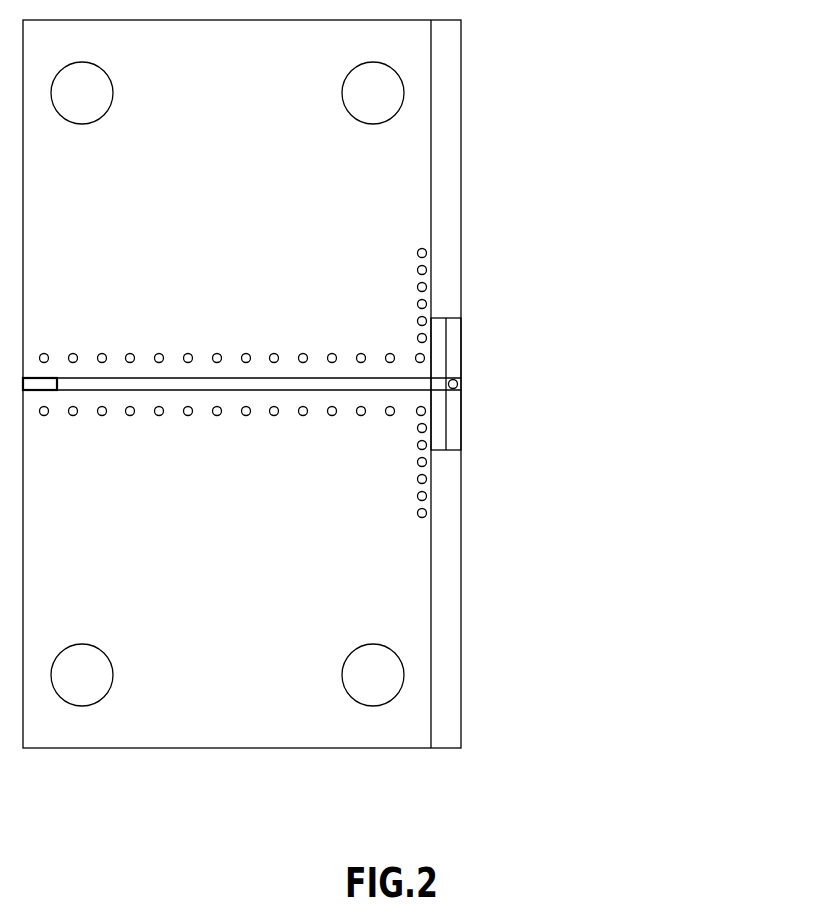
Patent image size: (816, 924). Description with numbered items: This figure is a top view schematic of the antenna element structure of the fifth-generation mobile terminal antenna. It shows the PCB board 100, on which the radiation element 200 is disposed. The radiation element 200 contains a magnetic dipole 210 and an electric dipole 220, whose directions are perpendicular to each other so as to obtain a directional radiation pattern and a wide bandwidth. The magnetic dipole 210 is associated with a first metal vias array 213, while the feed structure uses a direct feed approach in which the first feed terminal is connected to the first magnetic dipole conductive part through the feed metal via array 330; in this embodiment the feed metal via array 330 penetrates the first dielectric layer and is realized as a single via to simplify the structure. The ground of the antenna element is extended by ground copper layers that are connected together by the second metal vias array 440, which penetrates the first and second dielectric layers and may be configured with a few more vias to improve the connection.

The PCB board 100 is at (461, 152).
The radiation element 200 is at (599, 391).
The magnetic dipole 210 is at (440, 335).
The electric dipole 220 is at (458, 364).
The feed metal via array 330 is at (460, 398).
The first metal vias array 213 is at (422, 497).
The second metal vias array 440 is at (305, 412).